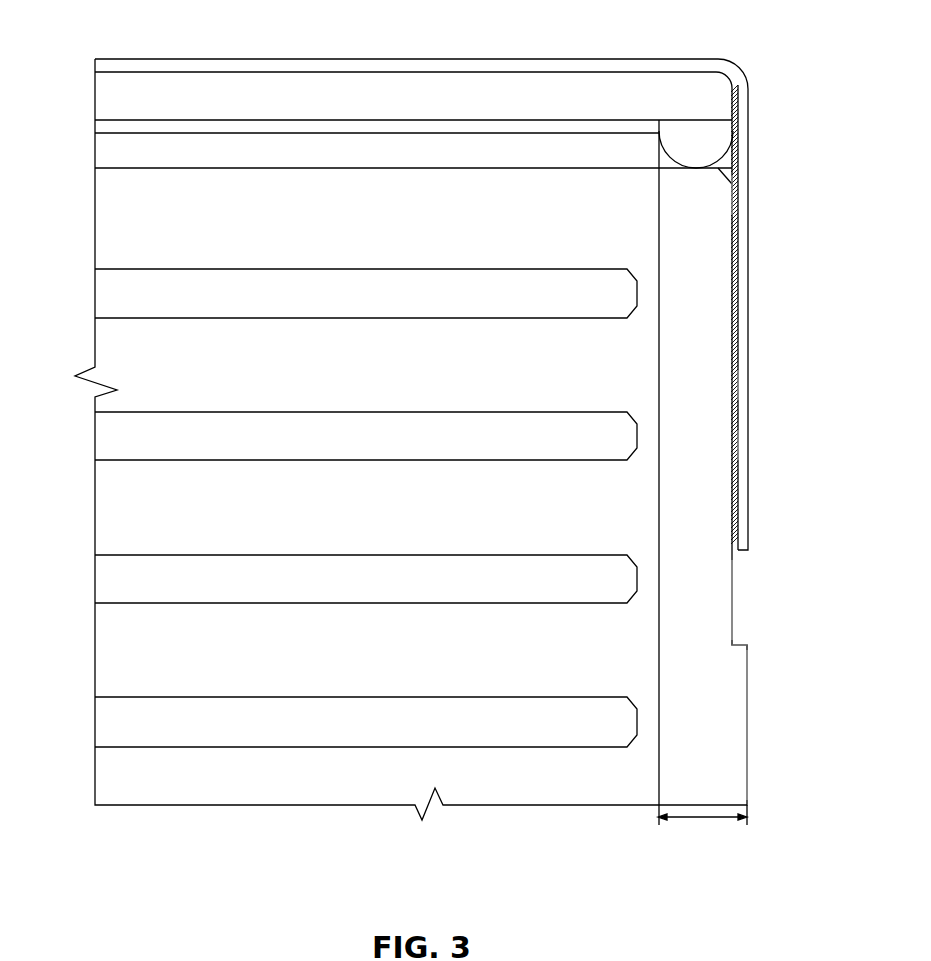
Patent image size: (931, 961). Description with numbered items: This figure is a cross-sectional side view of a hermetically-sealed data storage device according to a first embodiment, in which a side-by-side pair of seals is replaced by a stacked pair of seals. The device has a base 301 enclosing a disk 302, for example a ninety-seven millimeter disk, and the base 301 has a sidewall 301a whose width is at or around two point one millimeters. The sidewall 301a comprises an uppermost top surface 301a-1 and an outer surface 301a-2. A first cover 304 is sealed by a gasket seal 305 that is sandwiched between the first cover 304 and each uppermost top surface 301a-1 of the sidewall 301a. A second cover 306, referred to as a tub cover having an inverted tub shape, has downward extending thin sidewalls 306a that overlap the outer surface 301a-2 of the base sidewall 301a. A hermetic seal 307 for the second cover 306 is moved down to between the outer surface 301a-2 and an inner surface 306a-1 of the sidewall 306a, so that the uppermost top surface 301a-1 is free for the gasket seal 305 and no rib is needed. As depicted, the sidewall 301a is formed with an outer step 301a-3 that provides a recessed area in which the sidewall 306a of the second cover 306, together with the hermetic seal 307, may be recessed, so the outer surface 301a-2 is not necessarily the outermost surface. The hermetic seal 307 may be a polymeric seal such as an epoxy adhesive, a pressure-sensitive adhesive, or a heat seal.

The base 301 is at (748, 768).
The sidewall 301a is at (731, 696).
The uppermost top surface 301a-1 is at (740, 195).
The outer surface 301a-2 is at (733, 580).
The outer step 301a-3 is at (737, 642).
The disk 302 is at (107, 291).
The first cover 304 is at (112, 97).
The gasket seal 305 is at (707, 142).
The second cover 306 is at (182, 63).
The sidewall 306a is at (743, 388).
The inner surface 306a-1 is at (740, 445).
The hermetic seal 307 is at (738, 280).